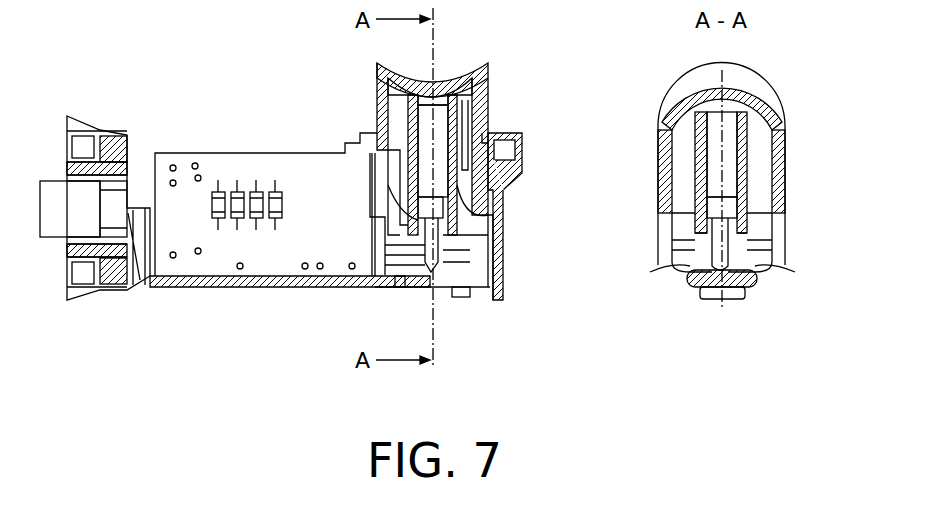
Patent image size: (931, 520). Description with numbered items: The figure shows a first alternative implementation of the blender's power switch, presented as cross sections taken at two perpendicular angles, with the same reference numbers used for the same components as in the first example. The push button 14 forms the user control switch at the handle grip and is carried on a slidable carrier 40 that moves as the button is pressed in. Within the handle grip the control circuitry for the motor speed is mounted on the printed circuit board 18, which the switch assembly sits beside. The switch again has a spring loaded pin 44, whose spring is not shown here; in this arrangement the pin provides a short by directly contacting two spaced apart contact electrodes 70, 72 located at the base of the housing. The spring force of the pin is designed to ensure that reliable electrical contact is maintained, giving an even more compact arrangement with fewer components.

The push button 14 is at (467, 73).
The printed circuit board 18 is at (190, 152).
The slidable carrier 40 is at (490, 107).
The spring loaded pin 44 is at (718, 243).
The contact electrode 70 is at (403, 278).
The contact electrode 72 is at (745, 270).